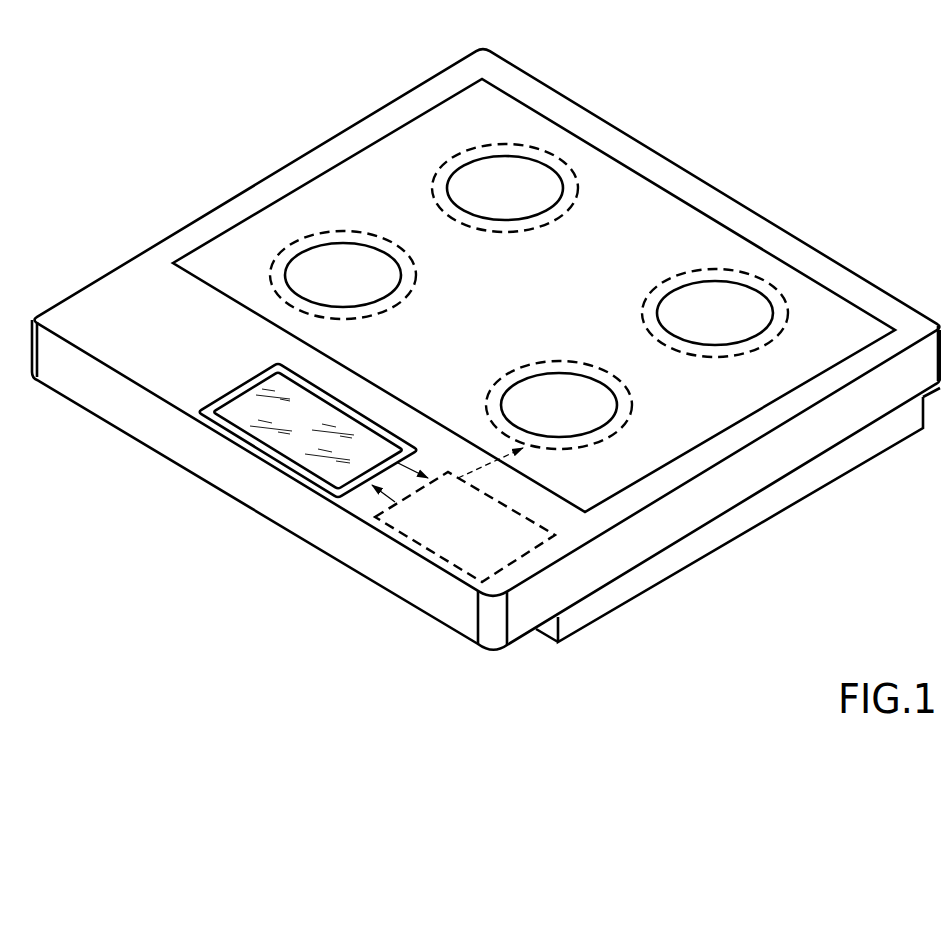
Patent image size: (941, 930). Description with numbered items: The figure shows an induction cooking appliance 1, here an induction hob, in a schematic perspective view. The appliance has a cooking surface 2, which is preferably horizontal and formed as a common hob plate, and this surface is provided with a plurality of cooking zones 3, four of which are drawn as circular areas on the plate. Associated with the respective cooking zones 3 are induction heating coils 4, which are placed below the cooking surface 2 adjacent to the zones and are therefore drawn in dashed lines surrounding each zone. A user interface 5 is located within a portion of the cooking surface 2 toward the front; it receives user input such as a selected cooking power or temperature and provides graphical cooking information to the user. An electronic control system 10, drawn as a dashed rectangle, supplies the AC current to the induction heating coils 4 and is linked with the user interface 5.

The induction cooking appliance 1 is at (202, 557).
The cooking surface 2 is at (838, 332).
The cooking zones 3 is at (527, 153).
The induction heating coils 4 is at (563, 158).
The user interface 5 is at (227, 432).
The electronic control system 10 is at (412, 538).